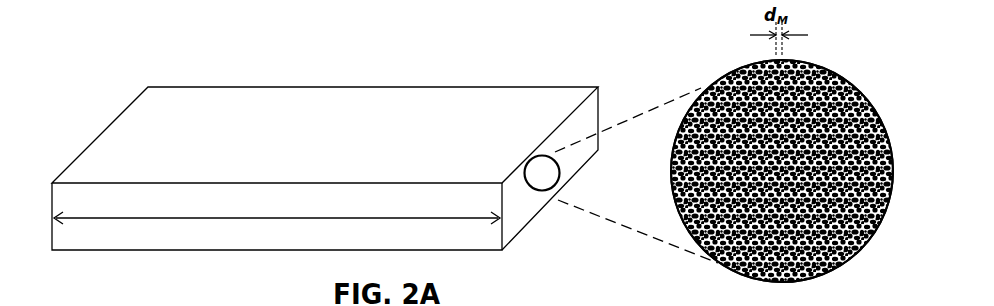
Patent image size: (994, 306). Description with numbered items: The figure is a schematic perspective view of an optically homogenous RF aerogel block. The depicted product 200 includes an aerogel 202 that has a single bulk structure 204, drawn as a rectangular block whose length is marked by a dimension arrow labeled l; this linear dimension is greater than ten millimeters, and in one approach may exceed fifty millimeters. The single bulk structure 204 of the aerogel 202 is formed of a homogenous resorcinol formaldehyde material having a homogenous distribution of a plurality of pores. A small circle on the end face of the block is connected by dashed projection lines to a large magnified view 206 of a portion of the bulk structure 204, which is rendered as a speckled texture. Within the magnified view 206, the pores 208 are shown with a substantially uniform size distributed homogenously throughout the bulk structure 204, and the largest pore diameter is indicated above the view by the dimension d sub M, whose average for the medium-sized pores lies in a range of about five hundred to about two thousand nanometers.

The product 200 is at (352, 134).
The aerogel 202 is at (325, 135).
The single bulk structure 204 is at (319, 136).
The magnified view 206 is at (832, 66).
The pores 208 is at (858, 86).